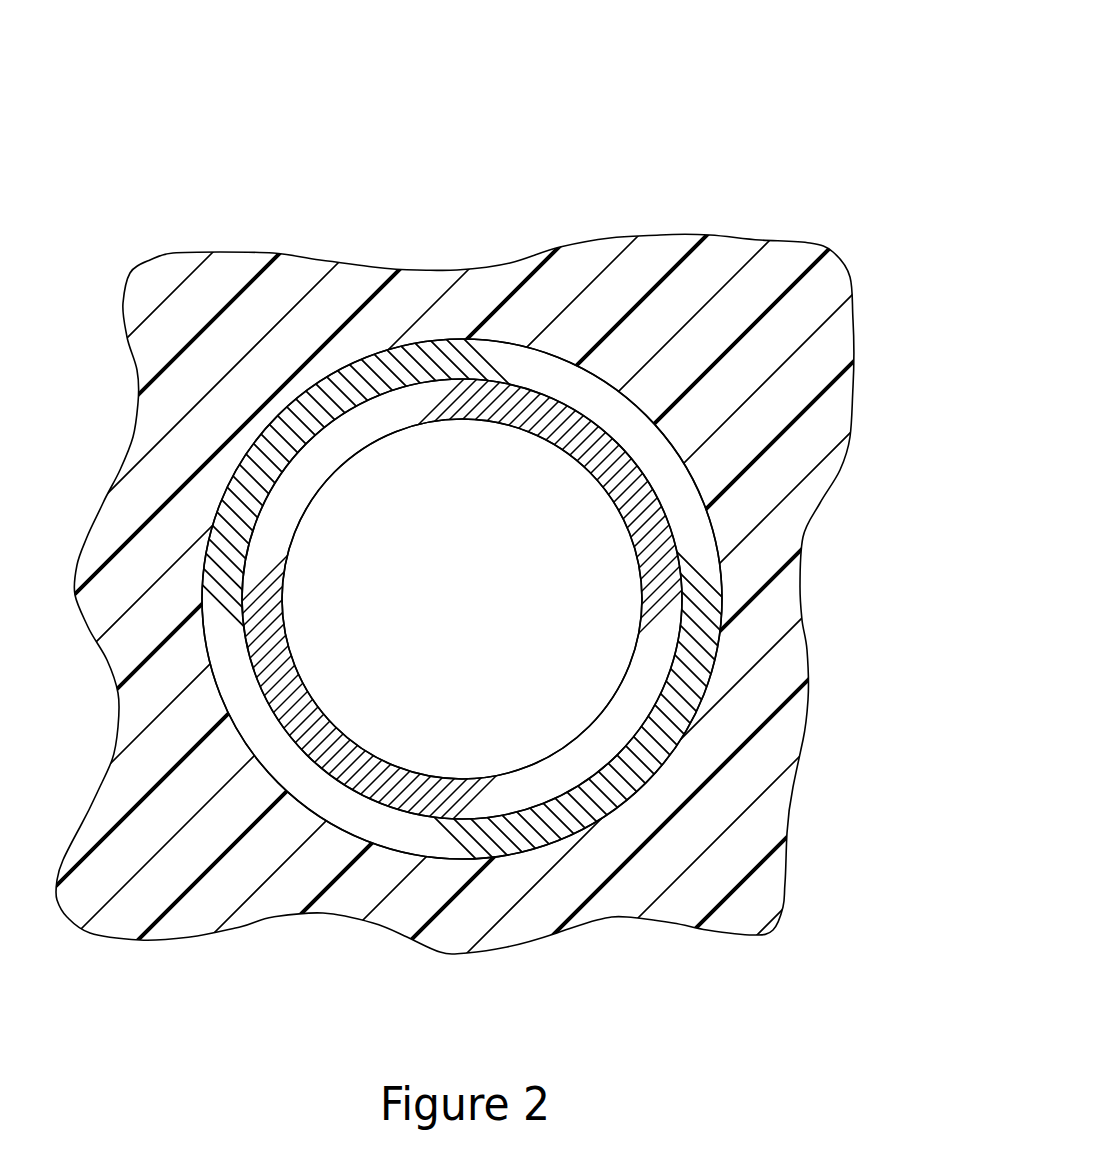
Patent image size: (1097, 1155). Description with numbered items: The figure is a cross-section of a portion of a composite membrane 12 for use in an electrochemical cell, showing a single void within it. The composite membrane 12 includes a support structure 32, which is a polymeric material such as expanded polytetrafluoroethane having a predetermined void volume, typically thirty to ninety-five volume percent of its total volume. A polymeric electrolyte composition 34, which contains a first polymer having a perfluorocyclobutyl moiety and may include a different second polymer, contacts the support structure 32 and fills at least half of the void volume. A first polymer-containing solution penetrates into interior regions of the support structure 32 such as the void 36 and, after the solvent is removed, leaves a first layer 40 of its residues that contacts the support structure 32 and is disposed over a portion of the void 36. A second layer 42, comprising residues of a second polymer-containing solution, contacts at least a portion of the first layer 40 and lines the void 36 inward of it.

The composite membrane 12 is at (783, 134).
The support structure 32 is at (327, 263).
The polymeric electrolyte composition 34 is at (457, 316).
The void 36 is at (407, 545).
The first layer 40 is at (712, 575).
The second layer 42 is at (610, 487).